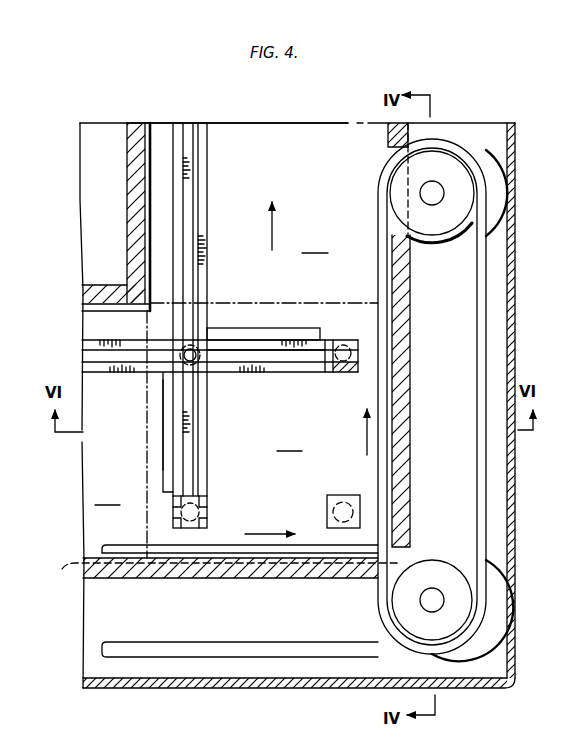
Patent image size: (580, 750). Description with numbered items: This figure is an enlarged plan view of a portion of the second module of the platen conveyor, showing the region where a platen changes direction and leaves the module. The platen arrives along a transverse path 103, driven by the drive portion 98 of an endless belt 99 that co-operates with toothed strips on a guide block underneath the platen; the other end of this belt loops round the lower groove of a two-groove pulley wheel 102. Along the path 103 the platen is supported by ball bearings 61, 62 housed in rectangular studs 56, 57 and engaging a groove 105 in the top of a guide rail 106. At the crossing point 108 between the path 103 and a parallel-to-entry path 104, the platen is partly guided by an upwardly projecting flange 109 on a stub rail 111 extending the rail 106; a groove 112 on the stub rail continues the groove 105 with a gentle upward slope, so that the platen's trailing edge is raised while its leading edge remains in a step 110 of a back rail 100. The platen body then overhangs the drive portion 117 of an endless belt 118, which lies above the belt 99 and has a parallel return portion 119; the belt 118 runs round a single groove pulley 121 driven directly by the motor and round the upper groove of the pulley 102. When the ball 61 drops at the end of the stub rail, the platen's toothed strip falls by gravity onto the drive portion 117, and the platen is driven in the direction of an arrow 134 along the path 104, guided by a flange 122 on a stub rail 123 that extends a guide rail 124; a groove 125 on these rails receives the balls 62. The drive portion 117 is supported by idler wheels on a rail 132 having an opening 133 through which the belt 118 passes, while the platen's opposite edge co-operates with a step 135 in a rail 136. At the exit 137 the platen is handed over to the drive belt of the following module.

The rectangular stud 56 is at (355, 340).
The rectangular stud 57 is at (177, 343).
The ball bearing 61 is at (358, 372).
The ball bearing 62 is at (200, 370).
The drive portion 98 is at (110, 545).
The endless belt 99 is at (224, 639).
The back rail 100 is at (118, 573).
The pulley wheel 102 is at (453, 625).
The path 103 is at (109, 496).
The path 104 is at (316, 244).
The groove 105 is at (87, 357).
The guide rail 106 is at (137, 372).
The crossing point 108 is at (291, 442).
The flange 109 is at (218, 303).
The step 110 is at (223, 576).
The stub rail 111 is at (298, 365).
The groove 112 is at (270, 353).
The drive portion 117 is at (378, 480).
The endless belt 118 is at (469, 278).
The return portion 119 is at (487, 320).
The single groove pulley 121 is at (447, 173).
The flange 122 is at (163, 460).
The stub rail 123 is at (203, 467).
The guide rail 124 is at (198, 190).
The groove 125 is at (190, 160).
The rail 132 is at (410, 360).
The opening 133 is at (385, 143).
The arrow 134 is at (272, 222).
The step 135 is at (150, 123).
The rail 136 is at (128, 160).
The exit 137 is at (273, 122).